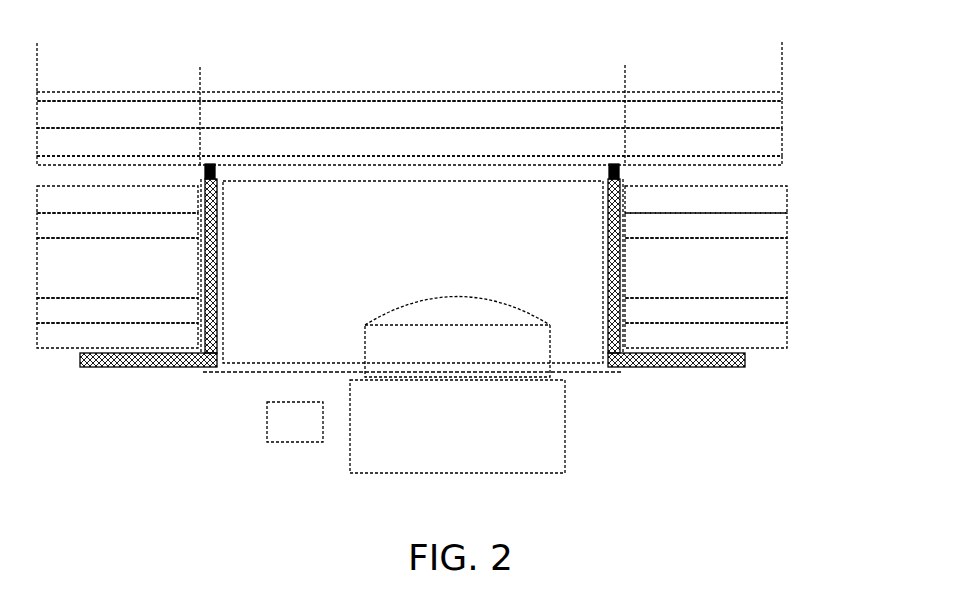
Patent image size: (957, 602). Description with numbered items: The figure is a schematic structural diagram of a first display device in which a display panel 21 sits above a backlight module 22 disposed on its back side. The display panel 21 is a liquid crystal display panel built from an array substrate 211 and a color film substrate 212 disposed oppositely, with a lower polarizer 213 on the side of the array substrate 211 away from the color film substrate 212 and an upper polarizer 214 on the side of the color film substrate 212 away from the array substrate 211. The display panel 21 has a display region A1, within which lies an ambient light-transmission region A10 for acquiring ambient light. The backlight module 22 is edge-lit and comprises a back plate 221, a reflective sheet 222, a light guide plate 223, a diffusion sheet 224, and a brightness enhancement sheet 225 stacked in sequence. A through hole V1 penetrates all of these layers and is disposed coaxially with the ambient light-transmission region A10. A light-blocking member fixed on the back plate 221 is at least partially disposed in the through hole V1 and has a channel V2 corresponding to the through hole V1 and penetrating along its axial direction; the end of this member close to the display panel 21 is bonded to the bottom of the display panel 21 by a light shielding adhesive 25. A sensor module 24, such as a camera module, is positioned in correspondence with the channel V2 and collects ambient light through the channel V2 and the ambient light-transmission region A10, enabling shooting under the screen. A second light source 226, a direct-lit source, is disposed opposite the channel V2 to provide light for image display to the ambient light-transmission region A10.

The display region A1 is at (782, 47).
The ambient light-transmission region A10 is at (625, 80).
The display panel 21 is at (459, 134).
The upper polarizer 214 is at (783, 98).
The color film substrate 212 is at (783, 116).
The array substrate 211 is at (783, 137).
The lower polarizer 213 is at (783, 158).
The light shielding adhesive 25 is at (620, 168).
The backlight module 22 is at (461, 273).
The brightness enhancement sheet 225 is at (788, 200).
The diffusion sheet 224 is at (788, 224).
The light guide plate 223 is at (788, 270).
The reflective sheet 222 is at (788, 312).
The back plate 221 is at (440, 341).
The second light source 226 is at (267, 423).
The sensor module 24 is at (565, 418).
The through hole V1 is at (215, 372).
The channel V2 is at (267, 363).